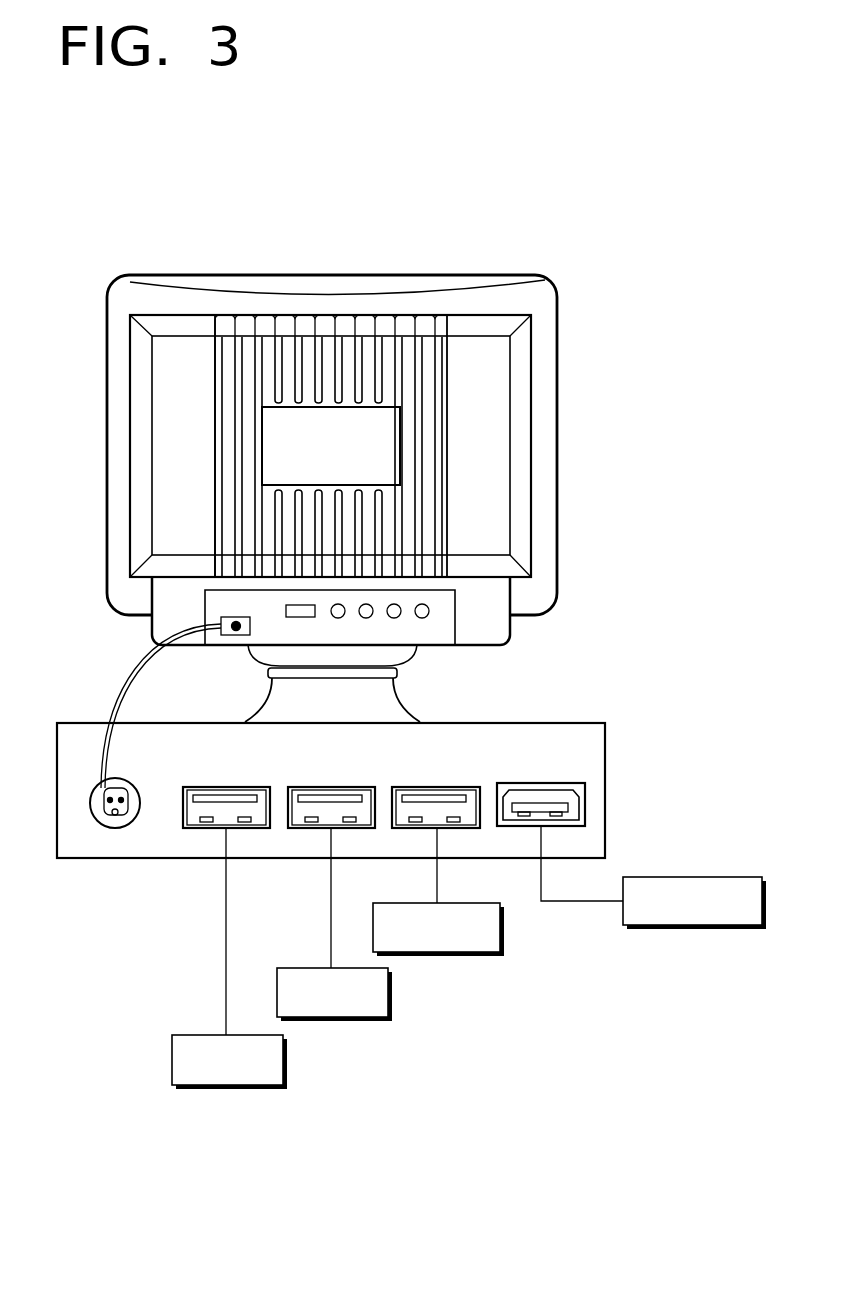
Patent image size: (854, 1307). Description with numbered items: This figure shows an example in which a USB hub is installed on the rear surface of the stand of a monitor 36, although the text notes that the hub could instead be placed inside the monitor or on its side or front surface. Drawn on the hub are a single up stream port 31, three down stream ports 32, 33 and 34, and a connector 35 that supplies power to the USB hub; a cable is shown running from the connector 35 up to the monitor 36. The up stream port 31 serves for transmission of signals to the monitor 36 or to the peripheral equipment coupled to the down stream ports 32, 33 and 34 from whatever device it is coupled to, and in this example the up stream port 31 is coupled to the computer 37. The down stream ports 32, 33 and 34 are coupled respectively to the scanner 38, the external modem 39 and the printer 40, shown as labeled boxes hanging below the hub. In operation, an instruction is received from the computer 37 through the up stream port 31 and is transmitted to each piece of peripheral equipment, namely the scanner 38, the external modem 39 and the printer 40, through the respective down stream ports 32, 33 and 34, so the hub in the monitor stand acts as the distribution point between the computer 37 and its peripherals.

The up stream port 31 is at (540, 783).
The down stream port 32 is at (445, 787).
The down stream port 33 is at (331, 787).
The down stream port 34 is at (235, 787).
The connector 35 is at (130, 785).
The monitor 36 is at (540, 442).
The computer 37 is at (697, 878).
The scanner 38 is at (463, 957).
The external modem 39 is at (353, 1020).
The printer 40 is at (245, 1088).